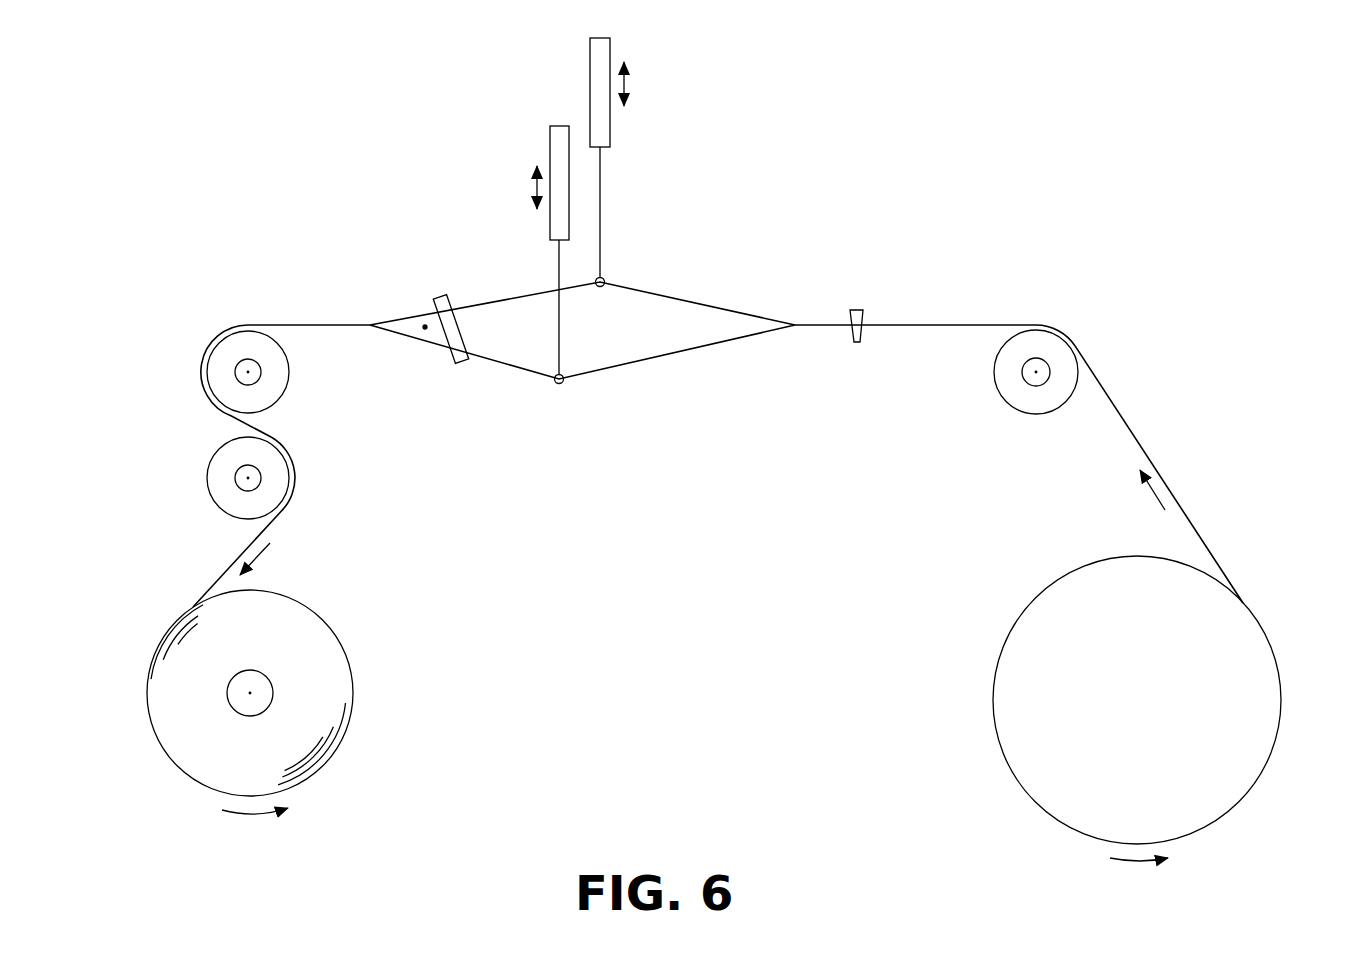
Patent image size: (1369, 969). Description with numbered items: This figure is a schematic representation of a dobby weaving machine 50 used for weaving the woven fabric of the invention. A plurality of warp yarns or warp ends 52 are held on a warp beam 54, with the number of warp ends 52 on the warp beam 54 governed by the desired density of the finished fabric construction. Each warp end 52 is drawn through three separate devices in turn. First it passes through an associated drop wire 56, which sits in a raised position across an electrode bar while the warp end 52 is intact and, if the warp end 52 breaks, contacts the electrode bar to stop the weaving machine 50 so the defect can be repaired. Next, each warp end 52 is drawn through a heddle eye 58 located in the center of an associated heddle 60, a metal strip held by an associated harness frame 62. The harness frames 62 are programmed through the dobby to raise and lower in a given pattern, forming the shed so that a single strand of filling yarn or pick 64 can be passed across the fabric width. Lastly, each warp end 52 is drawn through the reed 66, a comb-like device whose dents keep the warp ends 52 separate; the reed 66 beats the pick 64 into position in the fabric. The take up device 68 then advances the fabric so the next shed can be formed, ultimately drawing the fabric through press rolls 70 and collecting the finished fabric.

The dobby weaving machine 50 is at (802, 112).
The warp ends 52 is at (697, 300).
The warp beam 54 is at (1243, 685).
The drop wire 56 is at (858, 310).
The heddle eye 58 is at (604, 279).
The heddle 60 is at (603, 213).
The harness frame 62 is at (598, 100).
The pick 64 is at (425, 327).
The reed 66 is at (440, 295).
The take up device 68 is at (330, 660).
The press rolls 70 is at (228, 397).